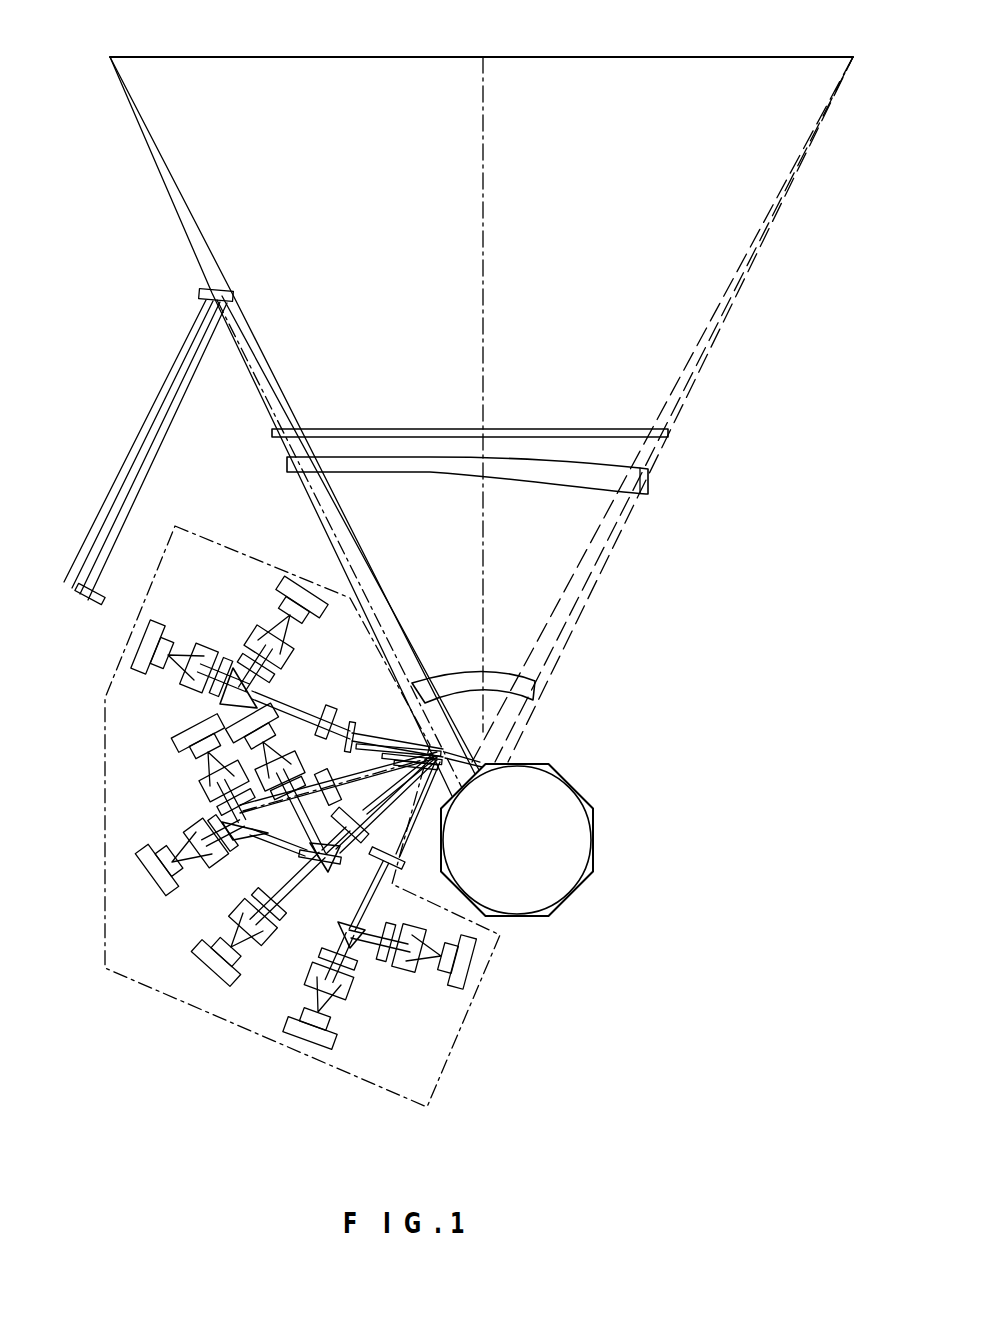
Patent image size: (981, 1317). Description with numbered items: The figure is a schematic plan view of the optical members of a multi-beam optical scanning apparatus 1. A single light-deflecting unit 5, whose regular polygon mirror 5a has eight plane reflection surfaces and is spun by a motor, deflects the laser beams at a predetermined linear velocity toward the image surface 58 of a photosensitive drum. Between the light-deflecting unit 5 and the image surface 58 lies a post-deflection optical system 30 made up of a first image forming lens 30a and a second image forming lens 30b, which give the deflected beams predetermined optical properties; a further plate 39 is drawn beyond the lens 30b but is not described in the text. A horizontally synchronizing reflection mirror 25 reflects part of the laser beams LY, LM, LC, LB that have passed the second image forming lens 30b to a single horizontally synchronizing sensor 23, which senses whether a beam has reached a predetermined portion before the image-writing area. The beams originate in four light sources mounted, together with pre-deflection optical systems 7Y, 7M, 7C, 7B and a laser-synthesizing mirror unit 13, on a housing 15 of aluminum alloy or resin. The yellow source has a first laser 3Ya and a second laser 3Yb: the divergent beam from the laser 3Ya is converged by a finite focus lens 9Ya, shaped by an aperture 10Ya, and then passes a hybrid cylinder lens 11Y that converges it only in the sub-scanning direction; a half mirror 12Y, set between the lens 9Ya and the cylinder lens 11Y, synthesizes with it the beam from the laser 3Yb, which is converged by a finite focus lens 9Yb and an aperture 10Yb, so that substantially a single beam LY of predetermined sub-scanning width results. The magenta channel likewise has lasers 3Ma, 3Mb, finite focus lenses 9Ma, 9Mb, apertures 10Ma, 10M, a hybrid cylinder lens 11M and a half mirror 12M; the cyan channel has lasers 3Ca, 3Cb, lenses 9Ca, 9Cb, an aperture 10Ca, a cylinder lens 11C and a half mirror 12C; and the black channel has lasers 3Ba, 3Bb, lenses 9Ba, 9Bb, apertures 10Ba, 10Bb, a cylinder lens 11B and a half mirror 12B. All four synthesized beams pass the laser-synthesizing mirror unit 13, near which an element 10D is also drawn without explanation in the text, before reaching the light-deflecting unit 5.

The multi-beam optical scanning apparatus 1 is at (664, 975).
The image surface 58 is at (627, 57).
The horizontally synchronizing reflection mirror 25 is at (200, 294).
The horizontally synchronizing sensor 23 is at (76, 606).
The laser beam LB is at (72, 547).
The laser beam LC is at (100, 522).
The laser beam LM is at (112, 541).
The laser beam LY is at (92, 580).
The dust-proof glass plate 39 is at (556, 428).
The post-deflection optical system 30 is at (748, 492).
The first image forming lens 30a is at (538, 690).
The second image forming lens 30b is at (650, 486).
The light-deflecting unit 5 is at (546, 840).
The polygon mirror 5a is at (584, 847).
The housing 15 is at (216, 528).
The laser-synthesizing mirror unit 13 is at (422, 748).
The cylinder lens 10D is at (338, 730).
The hybrid cylinder lens 11Y is at (350, 720).
The hybrid cylinder lens 11M is at (300, 857).
The hybrid cylinder lens 11C is at (350, 840).
The hybrid cylinder lens 11B is at (385, 868).
The pre-deflection optical system 7Y is at (214, 616).
The pre-deflection optical system 7M is at (167, 819).
The pre-deflection optical system 7C is at (205, 862).
The pre-deflection optical system 7B is at (405, 1018).
The first laser 3Ya is at (135, 655).
The second laser 3Yb is at (300, 590).
The first laser 3Ma is at (140, 878).
The second laser 3Mb is at (174, 740).
The first laser 3Ca is at (200, 961).
The second laser 3Cb is at (228, 720).
The first laser 3Ba is at (300, 1042).
The second laser 3Bb is at (476, 962).
The finite focus lens 9Ya is at (190, 680).
The finite focus lens 9Yb is at (262, 638).
The finite focus lens 9Ma is at (190, 845).
The finite focus lens 9Mb is at (204, 785).
The finite focus lens 9Ca is at (246, 928).
The finite focus lens 9Cb is at (280, 758).
The finite focus lens 9Ba is at (334, 995).
The finite focus lens 9Bb is at (414, 966).
The aperture 10Ya is at (220, 668).
The aperture 10Yb is at (278, 666).
The magenta aperture/lens 10M is at (218, 804).
The aperture 10Ma is at (222, 846).
The aperture 10Ca is at (276, 920).
The aperture 10Ba is at (348, 968).
The aperture 10Bb is at (384, 958).
The half mirror 12Y is at (236, 706).
The half mirror 12M is at (252, 838).
The half mirror 12C is at (330, 872).
The half mirror 12B is at (358, 950).